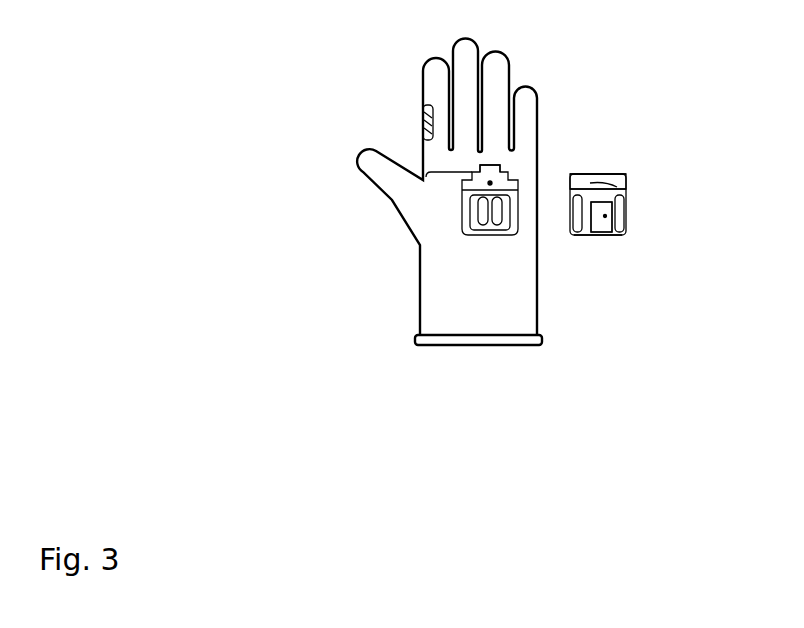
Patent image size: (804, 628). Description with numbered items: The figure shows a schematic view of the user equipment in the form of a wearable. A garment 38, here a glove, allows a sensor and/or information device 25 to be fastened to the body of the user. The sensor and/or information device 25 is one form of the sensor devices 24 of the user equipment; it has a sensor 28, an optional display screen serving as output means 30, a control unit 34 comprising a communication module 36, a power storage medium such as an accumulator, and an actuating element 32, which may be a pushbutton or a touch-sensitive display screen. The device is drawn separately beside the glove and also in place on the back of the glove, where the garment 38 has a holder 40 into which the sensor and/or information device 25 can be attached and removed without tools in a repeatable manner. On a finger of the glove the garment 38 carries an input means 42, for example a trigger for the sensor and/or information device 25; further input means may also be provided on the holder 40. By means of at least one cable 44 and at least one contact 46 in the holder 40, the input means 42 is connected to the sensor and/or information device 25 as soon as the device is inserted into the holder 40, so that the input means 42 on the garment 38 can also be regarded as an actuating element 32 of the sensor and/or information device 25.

The sensor device 24 is at (624, 247).
The sensor and/or information device 25 is at (605, 235).
The sensor 28 is at (625, 185).
The output means 30 is at (606, 216).
The actuating element 32 is at (351, 112).
The control unit 34 is at (586, 174).
The communication module 36 is at (586, 234).
The garment 38 is at (437, 295).
The holder 40 is at (497, 228).
The input means 42 is at (423, 120).
The cable 44 is at (440, 173).
The contact 46 is at (490, 182).